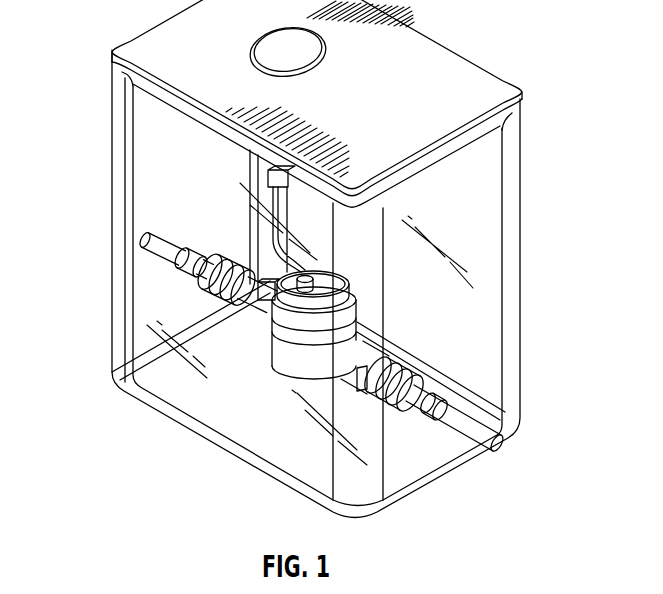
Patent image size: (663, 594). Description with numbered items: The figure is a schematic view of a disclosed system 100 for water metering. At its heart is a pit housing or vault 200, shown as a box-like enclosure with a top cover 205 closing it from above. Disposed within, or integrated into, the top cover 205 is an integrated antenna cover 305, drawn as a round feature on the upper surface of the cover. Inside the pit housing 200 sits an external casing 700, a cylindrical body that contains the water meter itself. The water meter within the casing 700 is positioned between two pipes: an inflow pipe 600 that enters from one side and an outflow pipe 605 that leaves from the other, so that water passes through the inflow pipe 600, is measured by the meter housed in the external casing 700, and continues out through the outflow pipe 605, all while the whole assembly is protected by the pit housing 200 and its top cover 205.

The system 100 is at (547, 42).
The pit housing 200 is at (267, 259).
The top cover 205 is at (418, 143).
The integrated antenna cover 305 is at (262, 49).
The inflow pipe 600 is at (505, 440).
The outflow pipe 605 is at (170, 242).
The external casing 700 is at (287, 353).